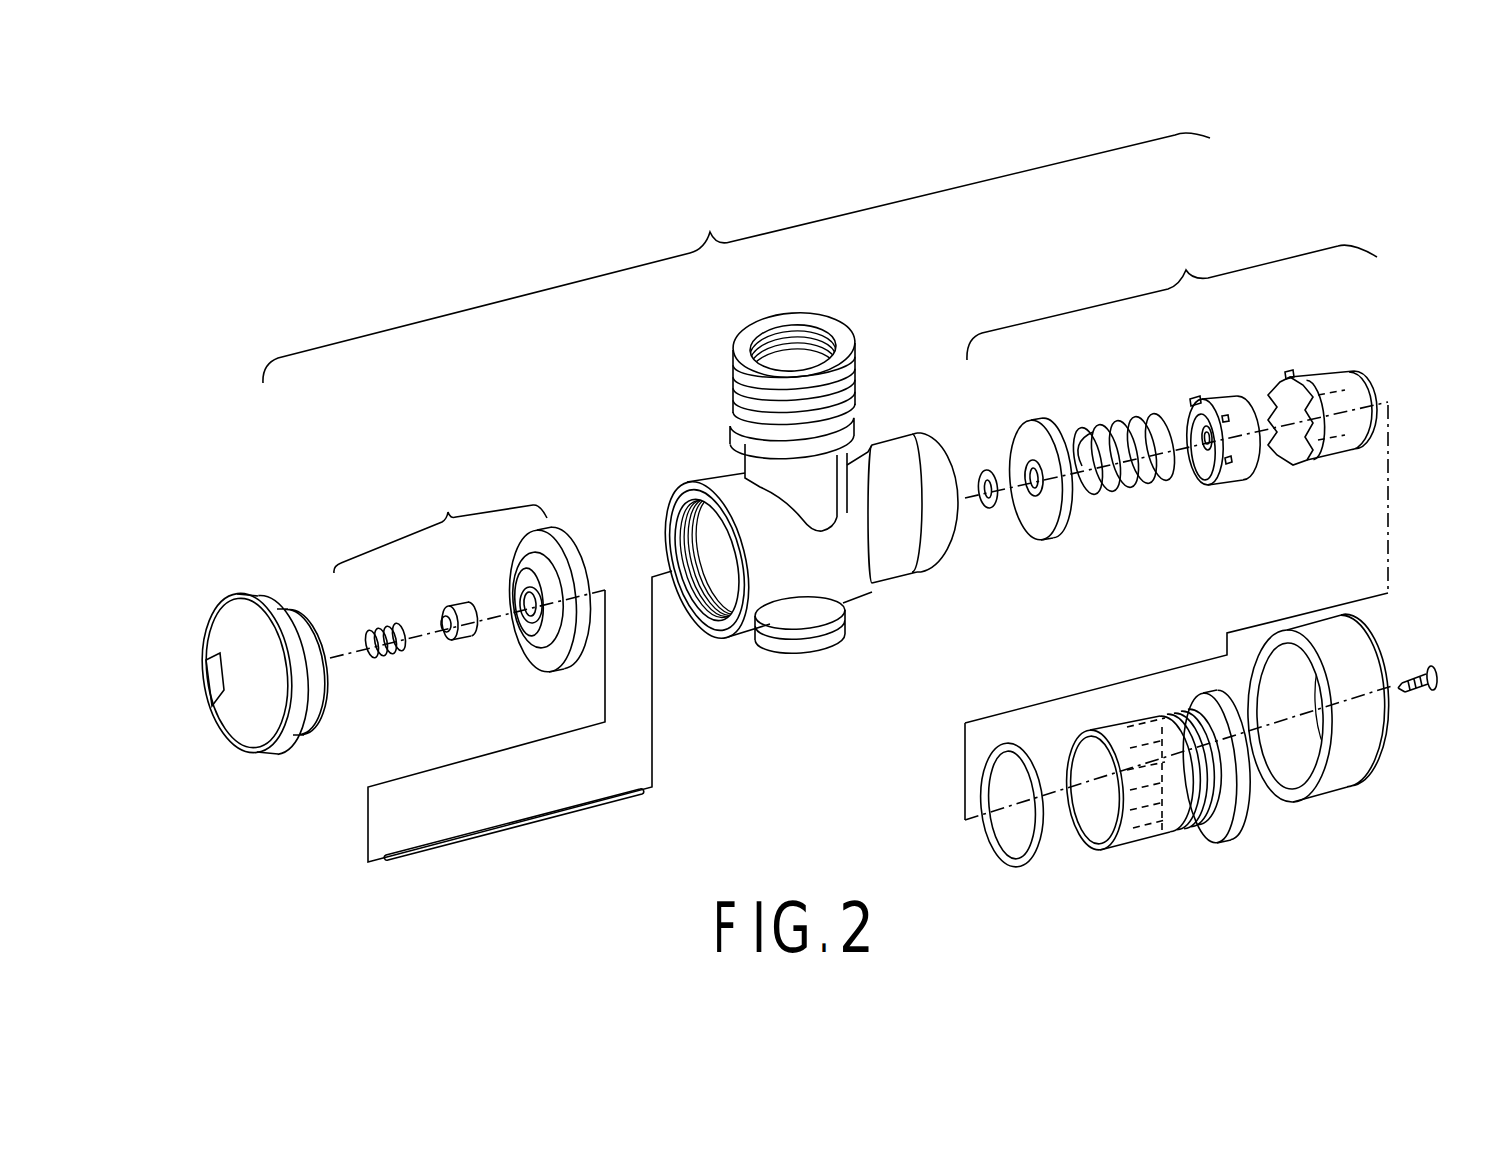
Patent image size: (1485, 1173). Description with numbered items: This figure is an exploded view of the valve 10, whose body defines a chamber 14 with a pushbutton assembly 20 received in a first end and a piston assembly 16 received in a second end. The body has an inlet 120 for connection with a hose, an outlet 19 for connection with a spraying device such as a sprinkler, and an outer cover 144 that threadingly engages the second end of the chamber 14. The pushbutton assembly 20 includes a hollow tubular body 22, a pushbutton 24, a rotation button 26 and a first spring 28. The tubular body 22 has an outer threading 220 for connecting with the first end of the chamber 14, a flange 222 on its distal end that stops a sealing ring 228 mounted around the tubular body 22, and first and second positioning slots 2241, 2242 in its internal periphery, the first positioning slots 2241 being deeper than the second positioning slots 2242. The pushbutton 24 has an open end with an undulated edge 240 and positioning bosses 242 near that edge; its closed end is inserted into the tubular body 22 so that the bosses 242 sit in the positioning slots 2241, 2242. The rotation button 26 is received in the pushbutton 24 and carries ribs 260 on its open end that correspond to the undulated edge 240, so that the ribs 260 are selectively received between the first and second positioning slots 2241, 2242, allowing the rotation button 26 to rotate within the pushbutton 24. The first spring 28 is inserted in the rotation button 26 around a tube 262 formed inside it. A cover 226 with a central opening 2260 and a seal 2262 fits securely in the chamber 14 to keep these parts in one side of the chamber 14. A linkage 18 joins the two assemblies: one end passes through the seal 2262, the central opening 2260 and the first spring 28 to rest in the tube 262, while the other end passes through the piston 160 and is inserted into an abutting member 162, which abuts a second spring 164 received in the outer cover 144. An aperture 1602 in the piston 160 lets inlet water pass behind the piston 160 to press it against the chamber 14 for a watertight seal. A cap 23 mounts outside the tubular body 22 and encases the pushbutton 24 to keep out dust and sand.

The valve 10 is at (804, 482).
The chamber 14 is at (746, 638).
The outlet 19 is at (823, 318).
The inlet 120 is at (820, 655).
The outer cover 144 is at (270, 742).
The piston assembly 16 is at (440, 524).
The piston 160 is at (568, 612).
The aperture 1602 is at (540, 650).
The abutting member 162 is at (466, 642).
The second spring 164 is at (383, 656).
The linkage 18 is at (498, 837).
The pushbutton assembly 20 is at (1186, 270).
The seal 2262 is at (990, 510).
The cover 226 is at (1036, 497).
The central opening 2260 is at (1027, 470).
The first spring 28 is at (1114, 496).
The rotation button 26 is at (1212, 432).
The ribs 260 is at (1190, 398).
The tube 262 is at (1208, 470).
The undulated edge 240 is at (1281, 464).
The pushbutton 24 is at (1331, 419).
The positioning bosses 242 is at (1293, 372).
The sealing ring 228 is at (1008, 868).
The hollow tubular body 22 is at (1186, 797).
The first positioning slots 2241 is at (1133, 728).
The second positioning slots 2242 is at (1150, 855).
The outer threading 220 is at (1180, 845).
The flange 222 is at (1240, 833).
The cap 23 is at (1392, 770).